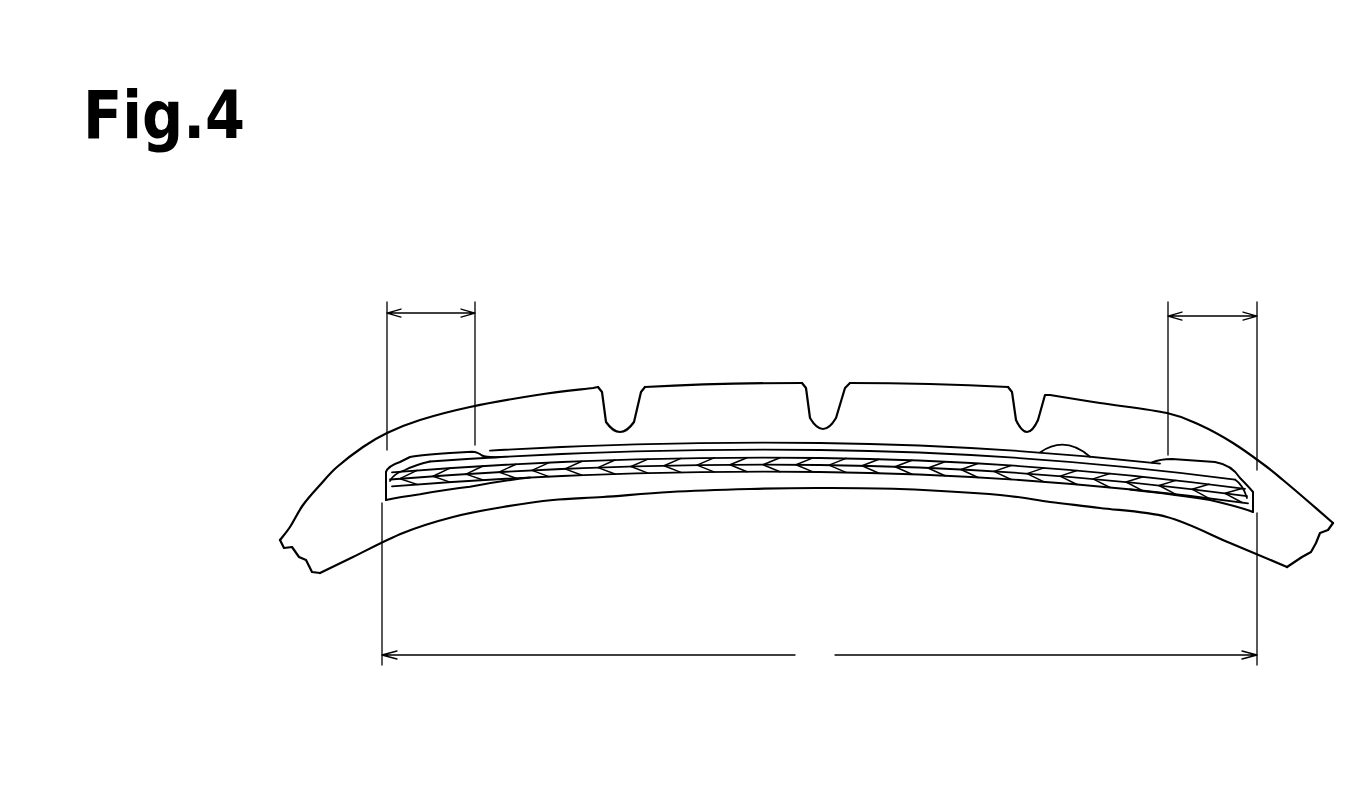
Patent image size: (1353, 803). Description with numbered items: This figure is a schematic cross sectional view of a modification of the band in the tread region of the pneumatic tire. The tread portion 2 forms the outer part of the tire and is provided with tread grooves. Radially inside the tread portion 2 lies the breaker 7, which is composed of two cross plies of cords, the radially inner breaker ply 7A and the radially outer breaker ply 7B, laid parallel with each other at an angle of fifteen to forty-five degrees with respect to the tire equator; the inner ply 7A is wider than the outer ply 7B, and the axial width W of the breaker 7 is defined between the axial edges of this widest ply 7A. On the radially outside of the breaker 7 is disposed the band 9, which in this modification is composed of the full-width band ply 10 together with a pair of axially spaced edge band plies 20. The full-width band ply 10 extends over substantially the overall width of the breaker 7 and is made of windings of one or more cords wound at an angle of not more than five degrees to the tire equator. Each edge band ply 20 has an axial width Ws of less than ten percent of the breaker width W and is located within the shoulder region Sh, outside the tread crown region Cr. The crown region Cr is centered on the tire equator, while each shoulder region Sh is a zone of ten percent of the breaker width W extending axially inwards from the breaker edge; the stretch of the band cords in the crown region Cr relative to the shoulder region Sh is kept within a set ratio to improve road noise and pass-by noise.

The tread portion 2 is at (689, 365).
The tread crown region Cr is at (874, 370).
The shoulder region Sh is at (417, 410).
The shoulder width Ws is at (822, 371).
The axial width of the breaker W is at (819, 593).
The breaker 7 is at (819, 548).
The radially inner breaker ply 7A is at (713, 467).
The radially outer breaker ply 7B is at (778, 457).
The band 9 is at (819, 548).
The full-width band ply 10 is at (1052, 453).
The edge band ply 20 is at (447, 470).